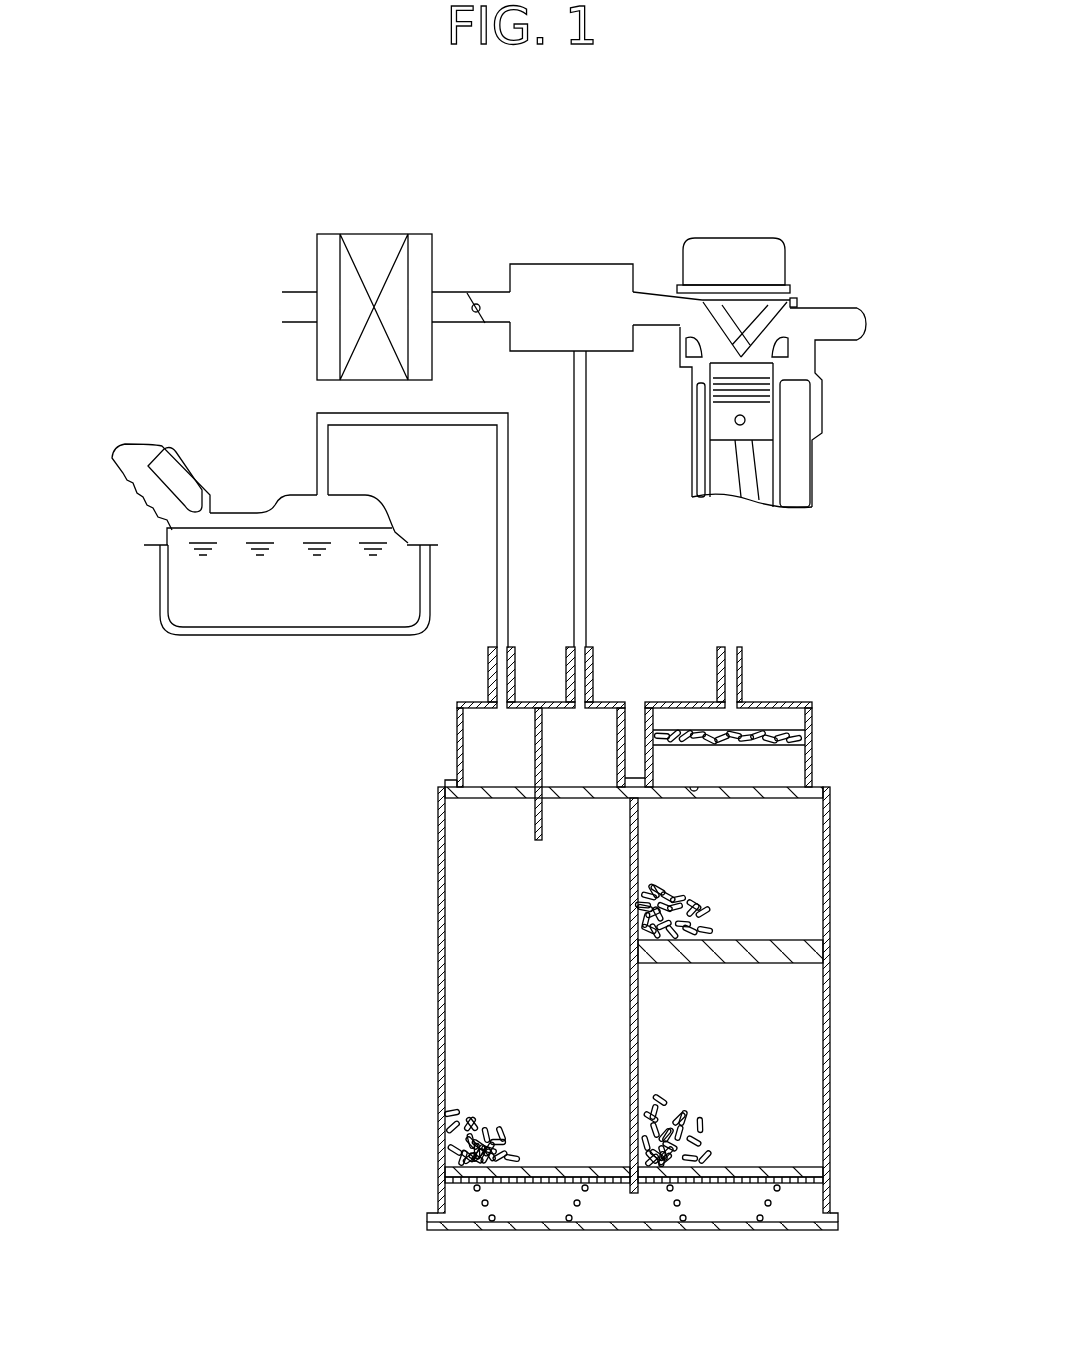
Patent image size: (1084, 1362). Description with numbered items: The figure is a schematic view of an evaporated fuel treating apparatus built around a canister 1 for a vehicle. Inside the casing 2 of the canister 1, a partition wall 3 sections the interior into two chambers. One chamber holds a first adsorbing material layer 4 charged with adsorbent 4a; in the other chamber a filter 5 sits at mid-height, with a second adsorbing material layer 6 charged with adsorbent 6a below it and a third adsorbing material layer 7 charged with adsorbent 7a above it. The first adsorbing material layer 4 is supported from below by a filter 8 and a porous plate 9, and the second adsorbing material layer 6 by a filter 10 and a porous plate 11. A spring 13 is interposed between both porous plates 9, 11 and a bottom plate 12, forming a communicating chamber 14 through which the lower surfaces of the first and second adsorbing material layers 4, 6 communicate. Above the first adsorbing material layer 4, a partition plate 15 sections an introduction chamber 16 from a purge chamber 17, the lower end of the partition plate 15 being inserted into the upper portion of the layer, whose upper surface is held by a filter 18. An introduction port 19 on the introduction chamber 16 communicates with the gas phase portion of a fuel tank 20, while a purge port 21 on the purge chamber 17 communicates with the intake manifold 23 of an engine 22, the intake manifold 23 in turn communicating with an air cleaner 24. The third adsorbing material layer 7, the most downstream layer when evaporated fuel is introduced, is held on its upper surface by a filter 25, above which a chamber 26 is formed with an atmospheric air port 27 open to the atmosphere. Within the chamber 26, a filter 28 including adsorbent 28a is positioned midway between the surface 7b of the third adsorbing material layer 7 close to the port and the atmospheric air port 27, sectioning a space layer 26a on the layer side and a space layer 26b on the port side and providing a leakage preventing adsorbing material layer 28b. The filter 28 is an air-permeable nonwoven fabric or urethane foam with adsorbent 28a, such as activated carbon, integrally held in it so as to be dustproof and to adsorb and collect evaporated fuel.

The canister 1 is at (601, 1045).
The casing 2 is at (442, 855).
The partition wall 3 is at (627, 1015).
The first adsorbing material layer 4 is at (489, 1079).
The adsorbent 4a is at (452, 1133).
The filter 5 is at (782, 953).
The second adsorbing material layer 6 is at (762, 1112).
The adsorbent 6a is at (690, 1128).
The third adsorbing material layer 7 is at (760, 917).
The adsorbent 7a is at (688, 915).
The surface close to the atmospheric air port 7b is at (692, 790).
The filter 8 is at (558, 1168).
The porous plate 9 is at (520, 1187).
The filter 10 is at (750, 1168).
The porous plate 11 is at (717, 1185).
The bottom plate 12 is at (553, 1230).
The spring 13 is at (768, 1206).
The communicating chamber 14 is at (650, 1212).
The partition plate 15 is at (540, 725).
The introduction chamber 16 is at (480, 760).
The purge chamber 17 is at (593, 728).
The filter 18 is at (505, 800).
The introduction port 19 is at (502, 665).
The fuel tank 20 is at (263, 633).
The purge port 21 is at (590, 645).
The engine 22 is at (690, 432).
The intake manifold 23 is at (567, 275).
The air cleaner 24 is at (377, 248).
The filter 25 is at (753, 795).
The chamber 26 is at (818, 786).
The space layer 26a is at (790, 775).
The space layer 26b is at (760, 717).
The atmospheric air port 27 is at (727, 647).
The filter including adsorbent 28 is at (818, 737).
The adsorbent 28a is at (673, 740).
The leakage preventing adsorbing material layer 28b is at (780, 730).